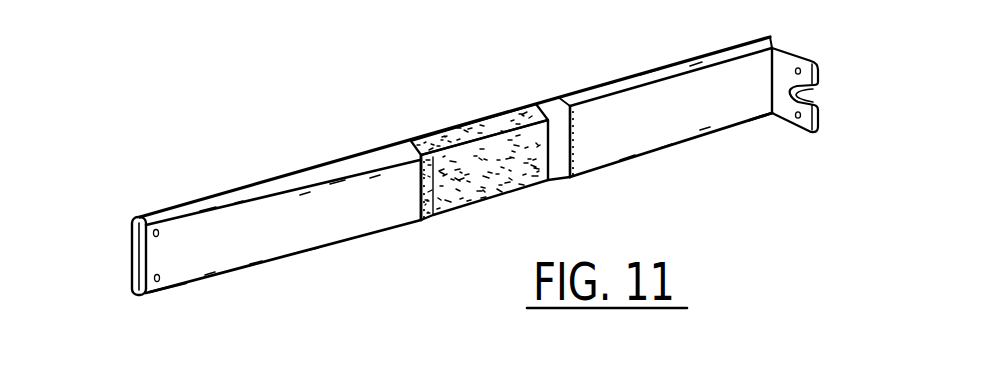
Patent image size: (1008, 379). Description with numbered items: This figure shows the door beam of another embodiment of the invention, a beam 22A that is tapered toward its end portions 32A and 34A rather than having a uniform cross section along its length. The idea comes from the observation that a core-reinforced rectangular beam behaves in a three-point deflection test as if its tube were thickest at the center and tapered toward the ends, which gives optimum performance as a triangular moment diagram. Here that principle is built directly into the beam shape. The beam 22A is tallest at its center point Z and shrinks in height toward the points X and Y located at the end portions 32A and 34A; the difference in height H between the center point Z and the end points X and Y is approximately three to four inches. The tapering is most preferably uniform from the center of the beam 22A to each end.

The beam 22A is at (317, 160).
The end portion 32A is at (153, 263).
The end portion 34A is at (786, 62).
The point Z is at (512, 100).
The point X is at (168, 297).
The point Y is at (768, 122).